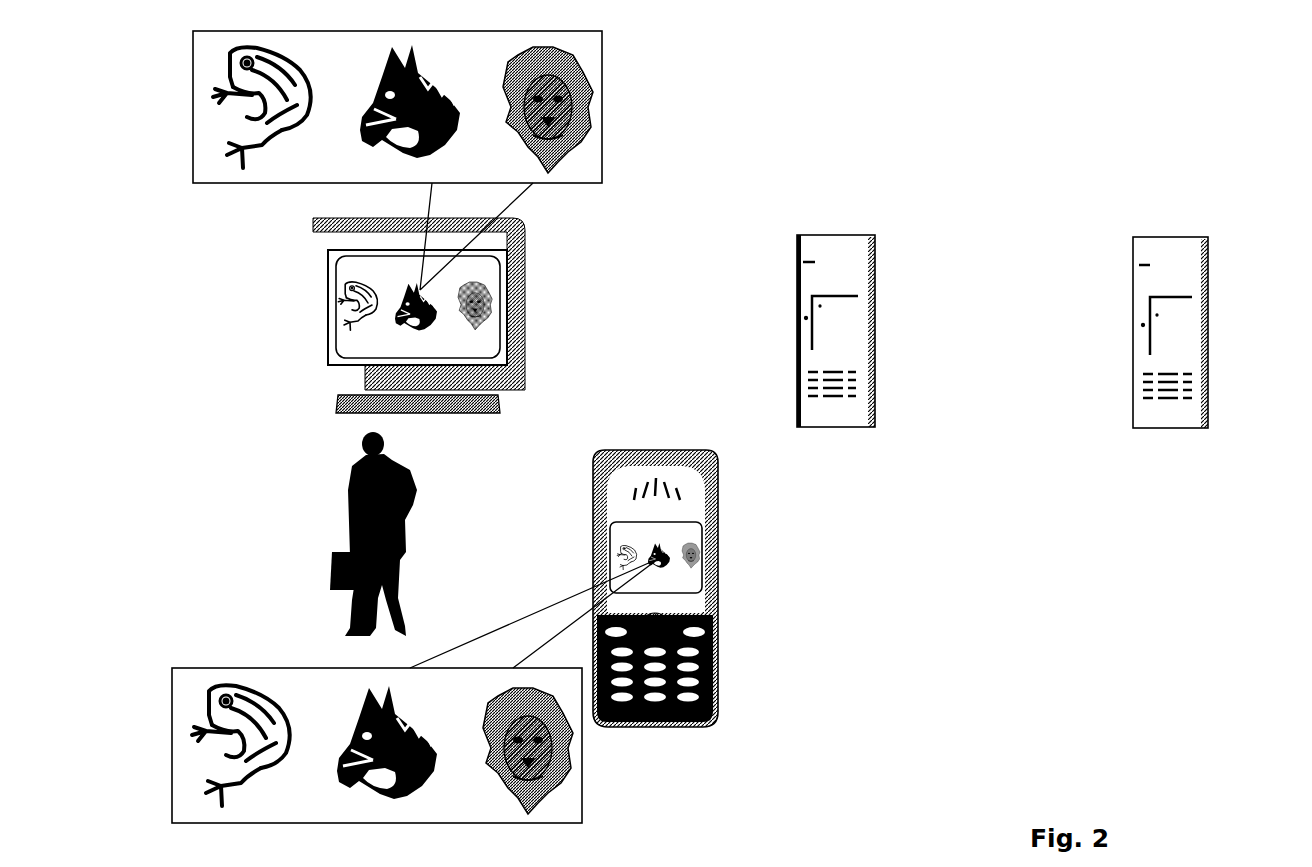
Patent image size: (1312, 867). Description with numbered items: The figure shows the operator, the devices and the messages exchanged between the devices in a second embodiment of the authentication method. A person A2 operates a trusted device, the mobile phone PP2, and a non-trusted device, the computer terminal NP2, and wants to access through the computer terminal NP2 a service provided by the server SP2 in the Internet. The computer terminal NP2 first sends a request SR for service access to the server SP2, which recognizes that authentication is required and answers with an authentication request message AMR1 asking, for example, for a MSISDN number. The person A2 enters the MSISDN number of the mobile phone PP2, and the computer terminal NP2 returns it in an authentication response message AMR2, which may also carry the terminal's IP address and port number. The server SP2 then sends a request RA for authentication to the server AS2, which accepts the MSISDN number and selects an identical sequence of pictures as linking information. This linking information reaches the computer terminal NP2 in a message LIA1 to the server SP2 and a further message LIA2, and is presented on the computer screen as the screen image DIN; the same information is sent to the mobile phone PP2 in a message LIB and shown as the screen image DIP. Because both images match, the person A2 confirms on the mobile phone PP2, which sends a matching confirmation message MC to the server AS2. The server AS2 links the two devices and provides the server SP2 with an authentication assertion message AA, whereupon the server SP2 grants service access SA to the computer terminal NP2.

The screen image DIN is at (603, 93).
The computer terminal NP2 is at (315, 270).
The server SP2 is at (877, 258).
The server AS2 is at (1210, 316).
The person A2 is at (352, 489).
The mobile phone PP2 is at (719, 511).
The screen image DIP is at (583, 763).
The request for service access SR is at (535, 244).
The authentication request message AMR1 is at (535, 293).
The authentication response message AMR2 is at (535, 340).
The message LIA2 is at (525, 375).
The service access SA is at (793, 410).
The request for authentication RA is at (1120, 304).
The message LIA1 is at (1120, 351).
The authentication assertion message AA is at (1120, 407).
The message LIB is at (1142, 428).
The matching confirmation message MC is at (1174, 438).